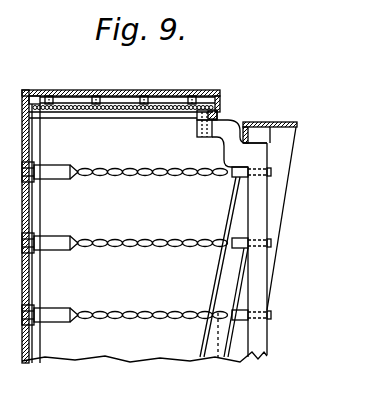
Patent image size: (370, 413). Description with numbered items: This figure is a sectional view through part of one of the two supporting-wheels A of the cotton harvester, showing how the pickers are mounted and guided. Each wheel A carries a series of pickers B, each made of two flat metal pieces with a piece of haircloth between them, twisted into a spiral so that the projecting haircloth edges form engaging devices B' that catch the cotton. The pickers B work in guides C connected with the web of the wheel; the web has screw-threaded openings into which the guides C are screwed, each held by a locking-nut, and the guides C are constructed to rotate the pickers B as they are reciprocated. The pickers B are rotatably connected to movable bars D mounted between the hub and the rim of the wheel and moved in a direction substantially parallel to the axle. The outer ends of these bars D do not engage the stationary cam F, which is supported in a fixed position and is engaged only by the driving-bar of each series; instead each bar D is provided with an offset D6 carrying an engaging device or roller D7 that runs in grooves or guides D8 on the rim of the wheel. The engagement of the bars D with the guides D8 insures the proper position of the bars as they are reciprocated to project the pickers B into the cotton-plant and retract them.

The supporting-wheel A is at (72, 89).
The picker B is at (175, 207).
The engaging device B' is at (175, 284).
The guide C is at (55, 178).
The movable bar D is at (262, 332).
The offset D6 is at (227, 138).
The engaging device or roller D7 is at (232, 121).
The grooves or guides D8 is at (163, 114).
The cam F is at (258, 135).